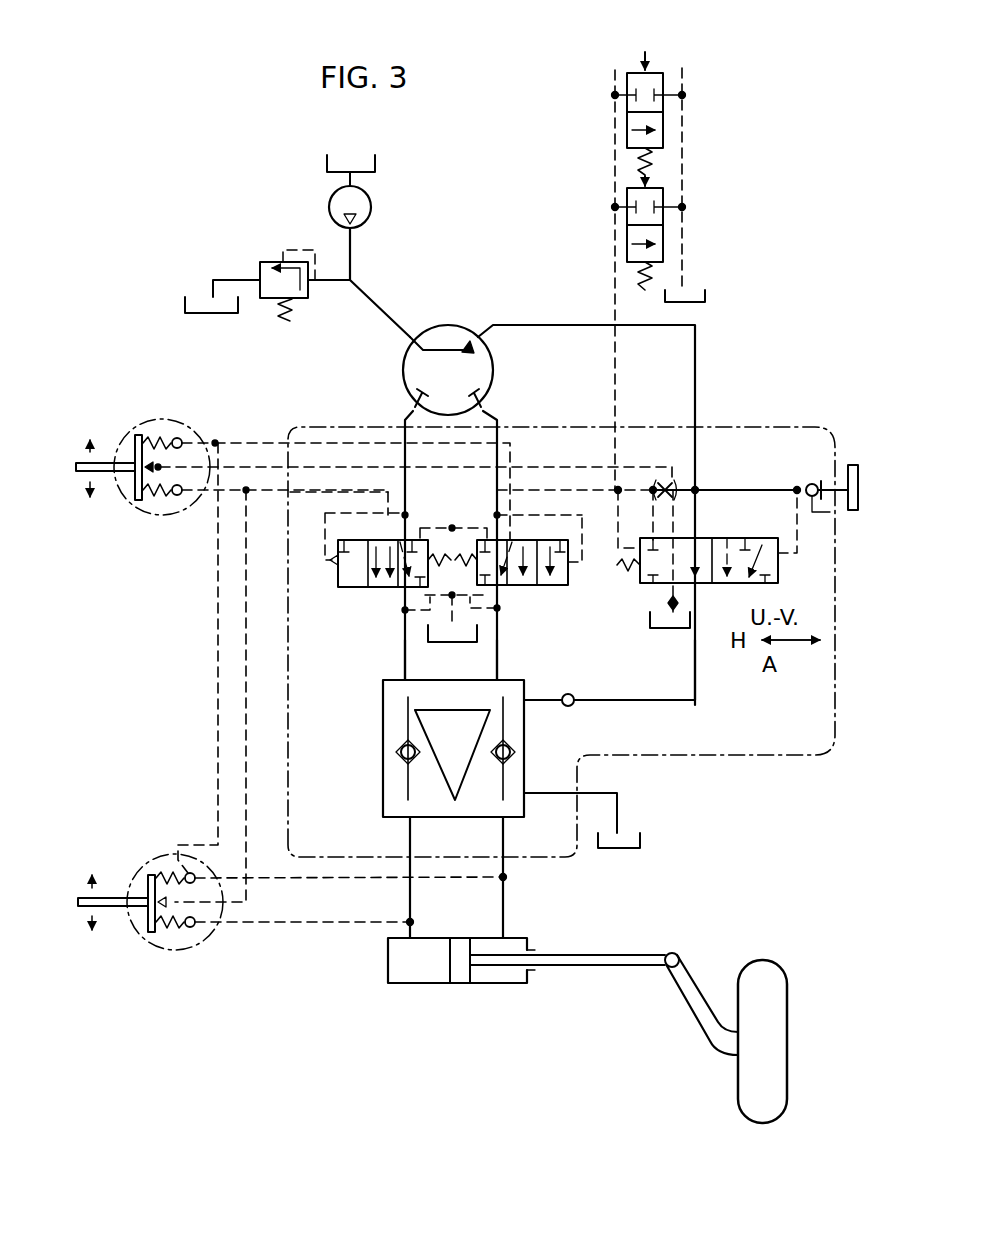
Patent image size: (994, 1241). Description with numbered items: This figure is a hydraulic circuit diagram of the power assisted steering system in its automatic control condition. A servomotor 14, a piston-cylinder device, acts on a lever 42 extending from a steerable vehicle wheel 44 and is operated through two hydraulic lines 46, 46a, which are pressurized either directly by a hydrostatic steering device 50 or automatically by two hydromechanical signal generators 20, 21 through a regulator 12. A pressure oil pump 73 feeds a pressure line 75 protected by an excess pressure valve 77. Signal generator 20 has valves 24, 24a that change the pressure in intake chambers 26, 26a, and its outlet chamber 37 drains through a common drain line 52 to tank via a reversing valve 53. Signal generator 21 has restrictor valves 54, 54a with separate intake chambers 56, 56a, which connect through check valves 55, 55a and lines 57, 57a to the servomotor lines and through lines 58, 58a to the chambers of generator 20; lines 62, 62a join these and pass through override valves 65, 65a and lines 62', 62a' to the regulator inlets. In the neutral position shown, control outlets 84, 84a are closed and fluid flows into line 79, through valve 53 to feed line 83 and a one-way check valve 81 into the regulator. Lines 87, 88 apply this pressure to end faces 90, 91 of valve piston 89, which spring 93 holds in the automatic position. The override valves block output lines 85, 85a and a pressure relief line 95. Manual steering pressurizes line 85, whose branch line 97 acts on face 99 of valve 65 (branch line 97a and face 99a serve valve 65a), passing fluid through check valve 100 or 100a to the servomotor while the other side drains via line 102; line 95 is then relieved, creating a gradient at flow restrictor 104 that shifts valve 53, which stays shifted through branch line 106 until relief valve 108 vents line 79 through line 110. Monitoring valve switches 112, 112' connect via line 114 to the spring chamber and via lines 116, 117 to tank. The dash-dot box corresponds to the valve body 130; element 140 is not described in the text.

The regulator 12 is at (512, 723).
The servomotor 14 is at (420, 966).
The signal generator 20 is at (112, 430).
The signal generator 21 is at (132, 1002).
The valve 24 is at (161, 498).
The valve 24a is at (158, 438).
The intake chamber 26 is at (181, 498).
The intake chamber 26a is at (177, 437).
The outlet chamber 37 is at (190, 442).
The lever 42 is at (690, 1004).
The steerable vehicle wheel 44 is at (765, 987).
The hydraulic line 46 is at (408, 906).
The hydraulic line 46a is at (505, 906).
The hydrostatic steering device 50 is at (452, 340).
The common drain line 52 is at (250, 463).
The reversing valve 53 is at (801, 556).
The valve 54 is at (176, 932).
The valve 54a is at (166, 864).
The check valve 55 is at (196, 930).
The check valve 55a is at (190, 872).
The intake chamber 56 is at (160, 932).
The intake chamber 56a is at (150, 872).
The line 57 is at (298, 925).
The line 57a is at (298, 880).
The line 58 is at (218, 648).
The line 58a is at (246, 698).
The signal line 62 is at (285, 512).
The signal line 62a is at (361, 459).
The line 62' is at (384, 660).
The line 62a' is at (544, 660).
The override valve 65 is at (353, 580).
The override valve 65a is at (518, 578).
The pressure oil pump 73 is at (371, 199).
The pressure line 75 is at (385, 312).
The excess pressure valve 77 is at (278, 262).
The line 79 is at (697, 398).
The one-way check valve 81 is at (609, 684).
The feed line 83 is at (694, 668).
The control outlet 84 is at (420, 392).
The control outlet 84a is at (474, 392).
The control output line 85 is at (403, 420).
The control output line 85a is at (499, 420).
The line 87 is at (685, 487).
The line 88 is at (797, 514).
The valve piston 89 is at (722, 537).
The end pressure face 90 is at (640, 578).
The end pressure face 91 is at (779, 572).
The spring 93 is at (612, 563).
The pressure relief line 95 is at (554, 488).
The branch line 97 is at (332, 513).
The branch line 97a is at (552, 516).
The pressure operating face 99 is at (337, 578).
The pressure operating face 99a is at (570, 578).
The check valve 100 is at (399, 755).
The check valve 100a is at (512, 752).
The line 102 is at (548, 795).
The flow restrictor 104 is at (641, 519).
The branch line 106 is at (683, 551).
The pressure relief valve 108 is at (811, 483).
The line 110 is at (822, 506).
The monitoring valve switch 112 is at (727, 240).
The monitoring valve switch 112' is at (717, 181).
The line 114 is at (612, 156).
The line 116 is at (673, 200).
The line 117 is at (664, 98).
The valve body 130 is at (772, 757).
The actuating element 140 is at (850, 463).